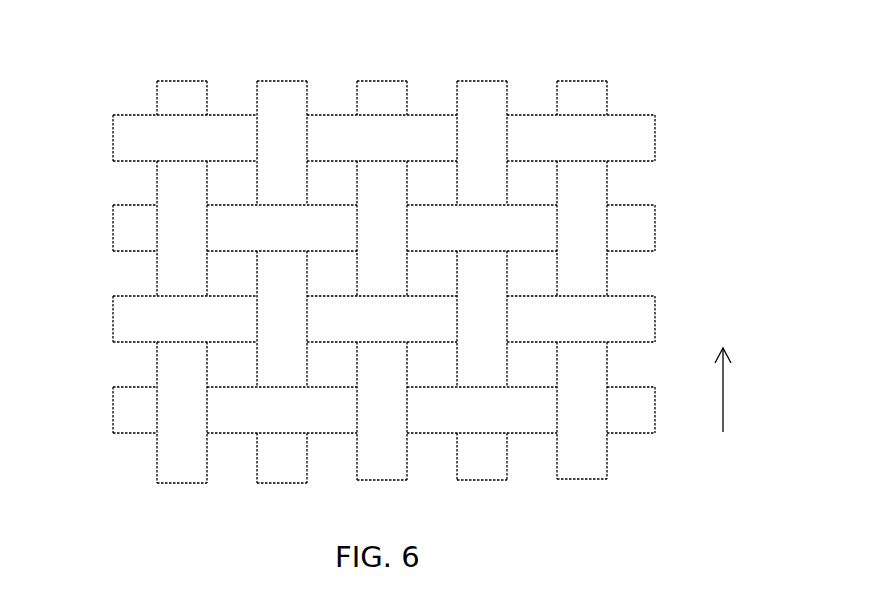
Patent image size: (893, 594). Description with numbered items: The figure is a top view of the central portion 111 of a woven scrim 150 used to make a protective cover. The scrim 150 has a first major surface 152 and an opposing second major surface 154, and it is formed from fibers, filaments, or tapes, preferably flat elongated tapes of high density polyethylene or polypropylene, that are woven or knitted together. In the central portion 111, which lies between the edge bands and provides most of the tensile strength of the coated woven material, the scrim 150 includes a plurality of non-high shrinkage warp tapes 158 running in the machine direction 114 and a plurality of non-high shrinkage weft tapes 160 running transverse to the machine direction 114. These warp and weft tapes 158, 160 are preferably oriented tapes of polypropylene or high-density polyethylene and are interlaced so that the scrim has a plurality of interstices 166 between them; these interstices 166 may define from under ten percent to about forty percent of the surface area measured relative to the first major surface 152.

The central portion 111 is at (97, 72).
The machine direction 114 is at (723, 398).
The woven scrim 150 is at (712, 72).
The first major surface 152 is at (590, 227).
The second major surface 154 is at (137, 344).
The non-high shrinkage warp tapes 158 is at (557, 80).
The non-high shrinkage weft tapes 160 is at (655, 218).
The interstices 166 is at (538, 374).